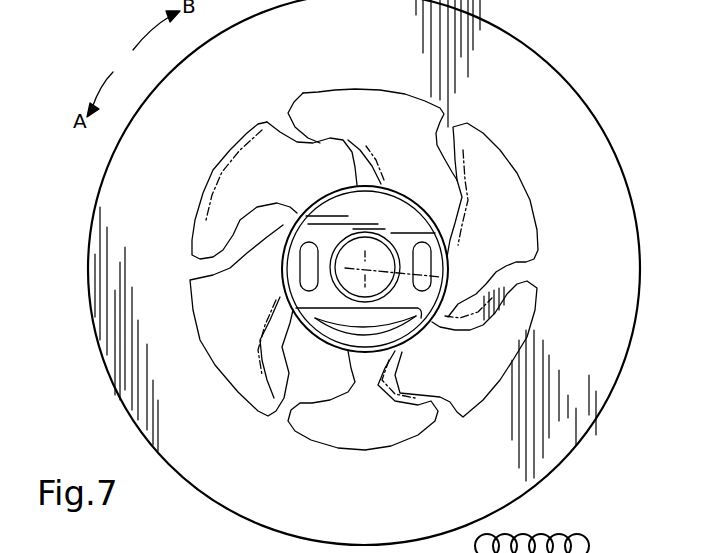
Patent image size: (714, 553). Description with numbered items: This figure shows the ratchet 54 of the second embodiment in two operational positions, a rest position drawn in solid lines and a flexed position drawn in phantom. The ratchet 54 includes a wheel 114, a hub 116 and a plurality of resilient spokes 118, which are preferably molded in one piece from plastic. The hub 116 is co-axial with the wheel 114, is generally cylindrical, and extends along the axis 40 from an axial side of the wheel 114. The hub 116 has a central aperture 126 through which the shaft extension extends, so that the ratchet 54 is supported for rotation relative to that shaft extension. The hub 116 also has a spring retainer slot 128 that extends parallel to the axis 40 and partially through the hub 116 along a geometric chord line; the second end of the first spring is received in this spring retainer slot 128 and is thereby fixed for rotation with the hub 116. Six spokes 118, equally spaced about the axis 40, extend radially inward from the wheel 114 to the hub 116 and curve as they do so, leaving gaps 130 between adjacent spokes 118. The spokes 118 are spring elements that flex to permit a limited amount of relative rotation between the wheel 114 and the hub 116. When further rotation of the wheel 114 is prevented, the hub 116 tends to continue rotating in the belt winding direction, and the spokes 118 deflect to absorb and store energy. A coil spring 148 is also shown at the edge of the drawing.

The ratchet 54 is at (501, 20).
The wheel 114 is at (123, 191).
The hub 116 is at (391, 215).
The resilient spokes 118 is at (438, 408).
The central aperture 126 is at (340, 266).
The spring retainer slot 128 is at (384, 328).
The gaps 130 is at (338, 97).
The axis 40 is at (441, 277).
The spring 148 is at (566, 535).